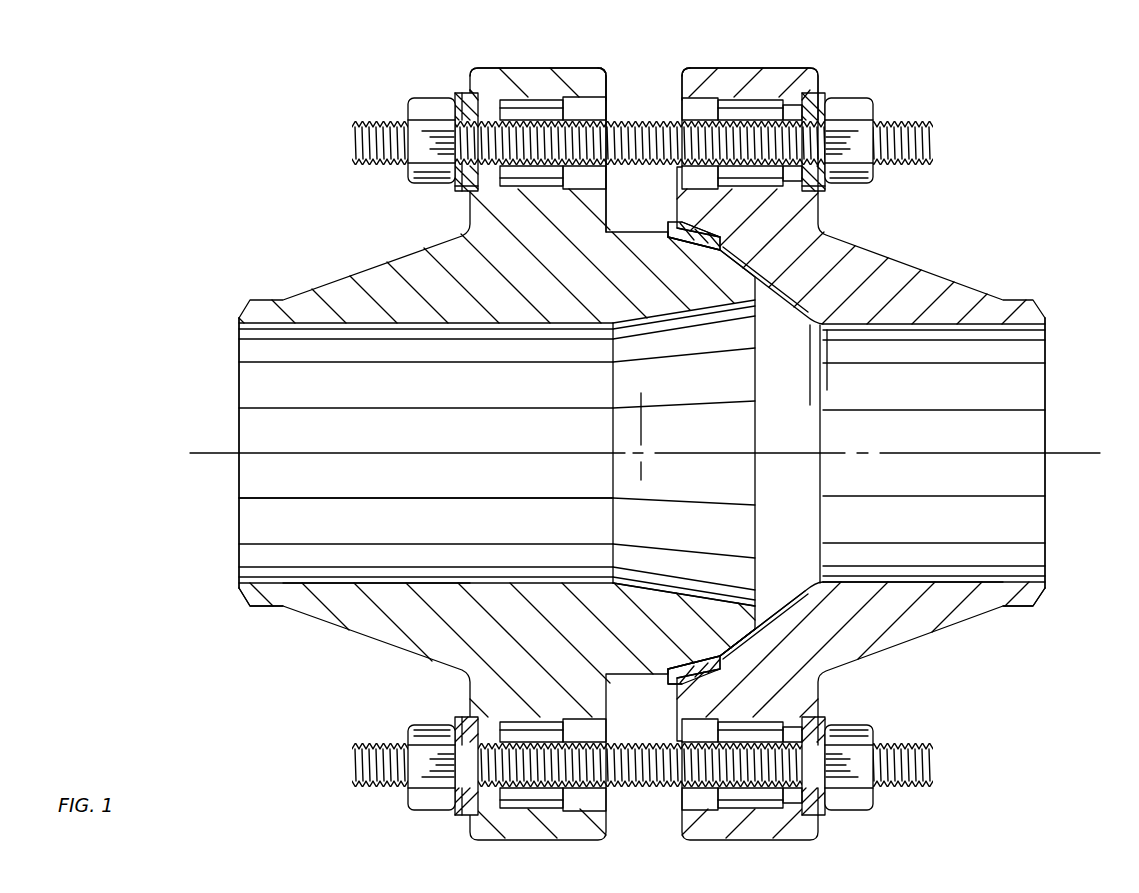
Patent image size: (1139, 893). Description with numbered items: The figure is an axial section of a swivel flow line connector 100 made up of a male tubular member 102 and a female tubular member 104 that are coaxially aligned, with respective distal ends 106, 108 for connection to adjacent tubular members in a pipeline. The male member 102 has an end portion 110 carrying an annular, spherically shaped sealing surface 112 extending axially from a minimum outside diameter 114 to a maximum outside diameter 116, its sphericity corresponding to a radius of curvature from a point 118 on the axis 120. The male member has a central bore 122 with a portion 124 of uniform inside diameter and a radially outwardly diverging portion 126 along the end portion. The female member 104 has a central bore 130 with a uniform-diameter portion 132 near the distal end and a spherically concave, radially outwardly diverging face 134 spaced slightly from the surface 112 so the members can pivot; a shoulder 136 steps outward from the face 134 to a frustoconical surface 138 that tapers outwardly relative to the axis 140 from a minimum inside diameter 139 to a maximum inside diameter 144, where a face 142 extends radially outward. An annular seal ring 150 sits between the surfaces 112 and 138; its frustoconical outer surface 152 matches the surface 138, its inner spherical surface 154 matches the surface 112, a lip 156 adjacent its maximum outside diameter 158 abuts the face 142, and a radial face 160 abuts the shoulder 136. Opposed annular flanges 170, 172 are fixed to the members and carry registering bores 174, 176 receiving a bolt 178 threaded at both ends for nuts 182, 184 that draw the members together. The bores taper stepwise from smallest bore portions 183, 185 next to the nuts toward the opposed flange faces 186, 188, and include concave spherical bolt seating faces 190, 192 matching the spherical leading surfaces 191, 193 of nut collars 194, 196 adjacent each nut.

The swivel flow line connector 100 is at (176, 112).
The male tubular member 102 is at (238, 352).
The female tubular member 104 is at (1050, 350).
The distal end 106 is at (243, 595).
The distal end 108 is at (1045, 596).
The end portion 110 is at (676, 598).
The sealing surface 112 is at (722, 658).
The minimum outside diameter 114 is at (758, 638).
The maximum outside diameter 116 is at (606, 228).
The point 118 is at (644, 460).
The axis 120 is at (516, 460).
The central bore 122 is at (240, 530).
The portion of generally uniform inside diameter 124 is at (408, 583).
The radially outwardly diverging portion 126 is at (684, 318).
The central bore 130 is at (1050, 537).
The portion of generally uniform inside diameter 132 is at (905, 582).
The radially outwardly diverging face 134 is at (790, 600).
The shoulder 136 is at (722, 666).
The frustoconical surface 138 is at (702, 674).
The minimum inside diameter 139 is at (728, 680).
The axis 140 is at (930, 460).
The face 142 is at (672, 690).
The maximum inside diameter 144 is at (690, 668).
The annular seal ring 150 is at (672, 242).
The outer surface 152 is at (700, 238).
The inner spherical surface 154 is at (700, 252).
The lip 156 is at (668, 222).
The maximum outside diameter 158 is at (678, 234).
The radial face 160 is at (728, 246).
The annular flange 170 is at (526, 68).
The annular flange 172 is at (738, 68).
The bore 174 is at (515, 108).
The bore 176 is at (766, 104).
The bolt 178 is at (935, 140).
The nut 182 is at (420, 102).
The smallest bore portion 183 is at (504, 180).
The nut 184 is at (860, 102).
The smallest bore portion 185 is at (786, 180).
The flange face 186 is at (603, 82).
The flange face 188 is at (672, 86).
The bolt seating face 190 is at (456, 96).
The leading surface 191 is at (474, 90).
The bolt seating face 192 is at (825, 104).
The leading surface 193 is at (806, 96).
The nut collar 194 is at (458, 186).
The nut collar 196 is at (835, 188).